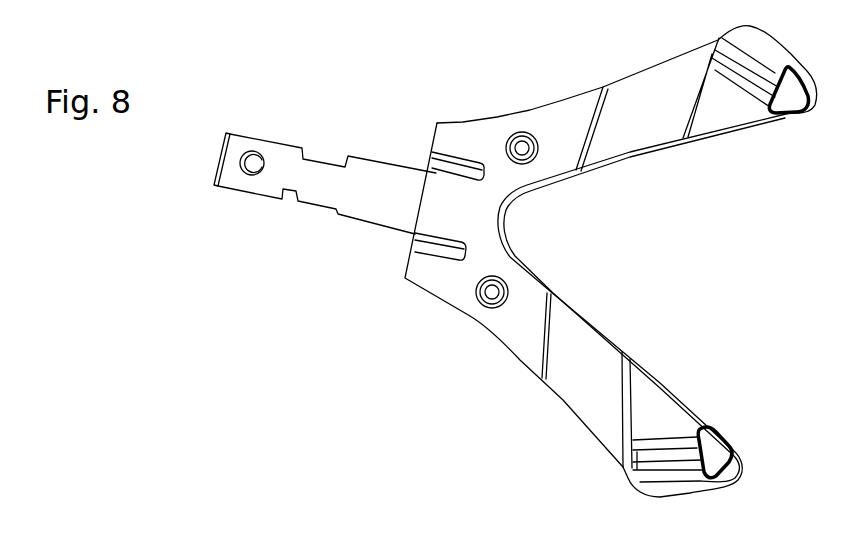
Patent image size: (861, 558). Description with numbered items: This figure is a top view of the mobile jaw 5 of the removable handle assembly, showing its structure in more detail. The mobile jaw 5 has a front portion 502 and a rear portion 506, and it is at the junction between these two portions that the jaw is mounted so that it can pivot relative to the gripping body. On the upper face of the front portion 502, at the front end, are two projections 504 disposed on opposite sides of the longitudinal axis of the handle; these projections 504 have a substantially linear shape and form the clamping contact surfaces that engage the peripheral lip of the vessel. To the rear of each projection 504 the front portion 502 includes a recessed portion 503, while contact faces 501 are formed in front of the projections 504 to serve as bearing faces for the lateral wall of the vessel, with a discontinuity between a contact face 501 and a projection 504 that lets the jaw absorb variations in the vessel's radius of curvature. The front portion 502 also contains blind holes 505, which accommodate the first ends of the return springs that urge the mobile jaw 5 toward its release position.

The mobile jaw 5 is at (336, 272).
The contact faces 501 is at (747, 458).
The front portion 502 is at (508, 350).
The recessed portion 503 is at (593, 350).
The projections 504 is at (630, 467).
The blind holes 505 is at (522, 150).
The rear portion 506 is at (373, 160).